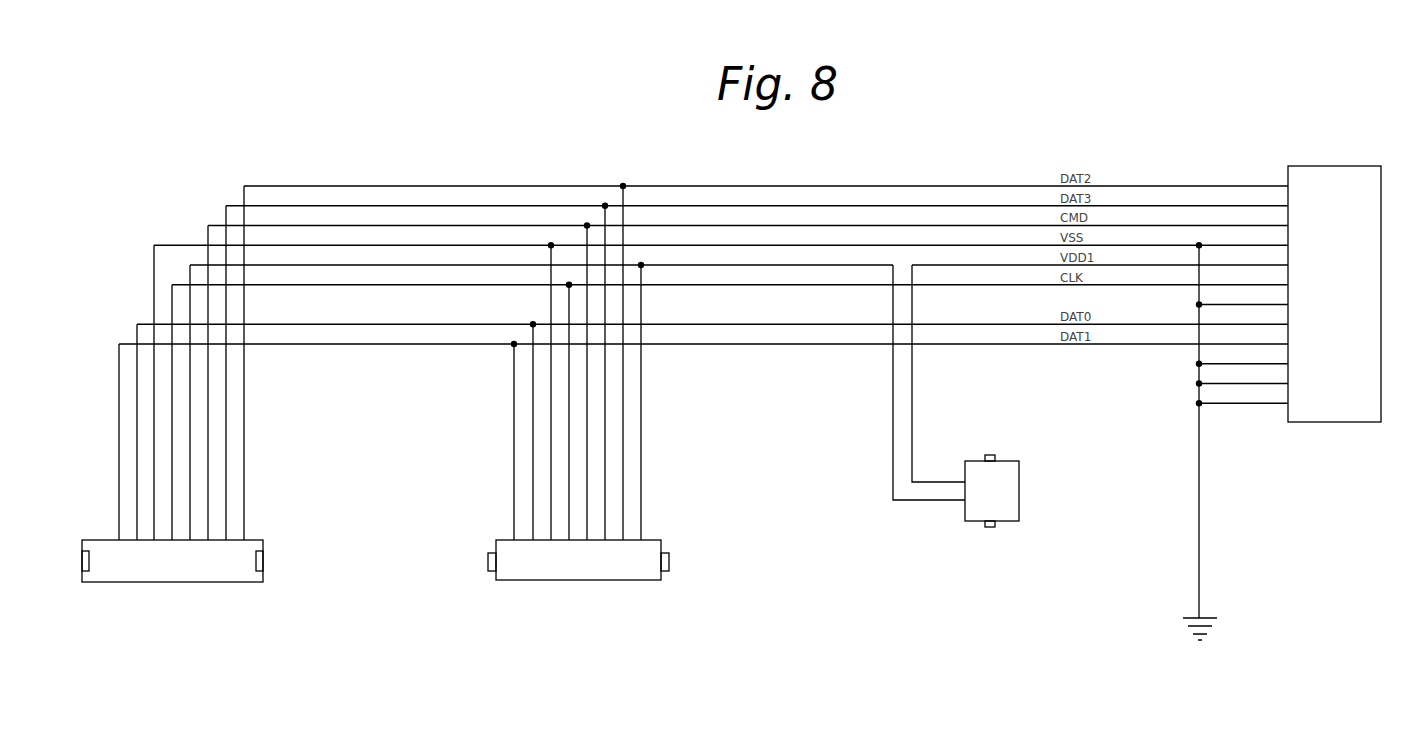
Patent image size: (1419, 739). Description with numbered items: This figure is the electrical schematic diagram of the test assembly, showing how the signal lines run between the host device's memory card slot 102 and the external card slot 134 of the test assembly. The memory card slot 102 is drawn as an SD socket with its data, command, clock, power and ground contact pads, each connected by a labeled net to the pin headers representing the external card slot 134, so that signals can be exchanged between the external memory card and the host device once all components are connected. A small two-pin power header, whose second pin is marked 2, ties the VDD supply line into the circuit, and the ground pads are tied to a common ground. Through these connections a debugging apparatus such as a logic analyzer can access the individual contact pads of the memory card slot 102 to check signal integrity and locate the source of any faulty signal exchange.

The memory card slot 102 is at (1351, 164).
The external card slot 134 is at (183, 567).
The power header J3 pin 2 (VDD) 2 is at (986, 490).